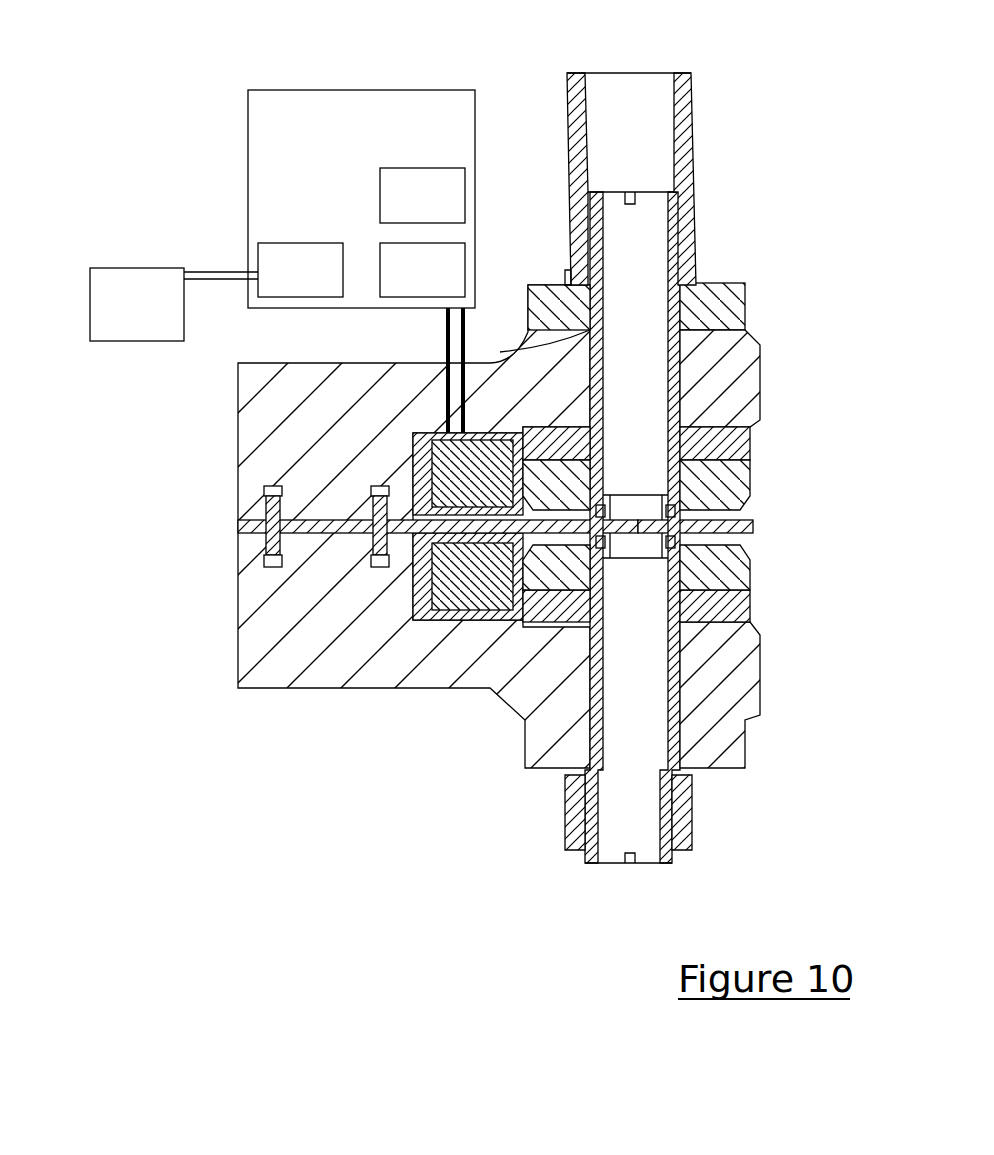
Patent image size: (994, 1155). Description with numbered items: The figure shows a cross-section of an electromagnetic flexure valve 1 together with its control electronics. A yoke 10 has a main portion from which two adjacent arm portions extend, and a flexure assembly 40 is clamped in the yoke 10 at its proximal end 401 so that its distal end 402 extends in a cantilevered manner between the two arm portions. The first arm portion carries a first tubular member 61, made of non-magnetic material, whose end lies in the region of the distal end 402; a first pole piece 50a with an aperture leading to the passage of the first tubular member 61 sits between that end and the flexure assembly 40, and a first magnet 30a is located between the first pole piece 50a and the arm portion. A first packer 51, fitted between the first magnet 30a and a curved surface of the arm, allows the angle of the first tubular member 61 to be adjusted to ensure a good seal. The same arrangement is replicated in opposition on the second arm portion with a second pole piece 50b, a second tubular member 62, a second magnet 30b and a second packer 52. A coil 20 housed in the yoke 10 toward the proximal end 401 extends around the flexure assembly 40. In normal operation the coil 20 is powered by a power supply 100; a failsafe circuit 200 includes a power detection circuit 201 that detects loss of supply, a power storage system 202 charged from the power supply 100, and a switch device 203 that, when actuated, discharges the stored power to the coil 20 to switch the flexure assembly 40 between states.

The valve 1 is at (151, 210).
The yoke 10 is at (730, 357).
The coil 20 is at (468, 605).
The first magnet 30a is at (750, 441).
The second magnet 30b is at (750, 607).
The flexure assembly 40 is at (757, 521).
The proximal end 401 is at (345, 523).
The distal end 402 is at (720, 527).
The first pole piece 50a is at (750, 473).
The second pole piece 50b is at (750, 579).
The first packer 51 is at (735, 402).
The second packer 52 is at (727, 638).
The first tubular member 61 is at (700, 236).
The second tubular member 62 is at (694, 800).
The power supply 100 is at (174, 304).
The failsafe circuit 200 is at (361, 199).
The power detection circuit 201 is at (300, 270).
The power storage system 202 is at (422, 195).
The switch device 203 is at (422, 270).